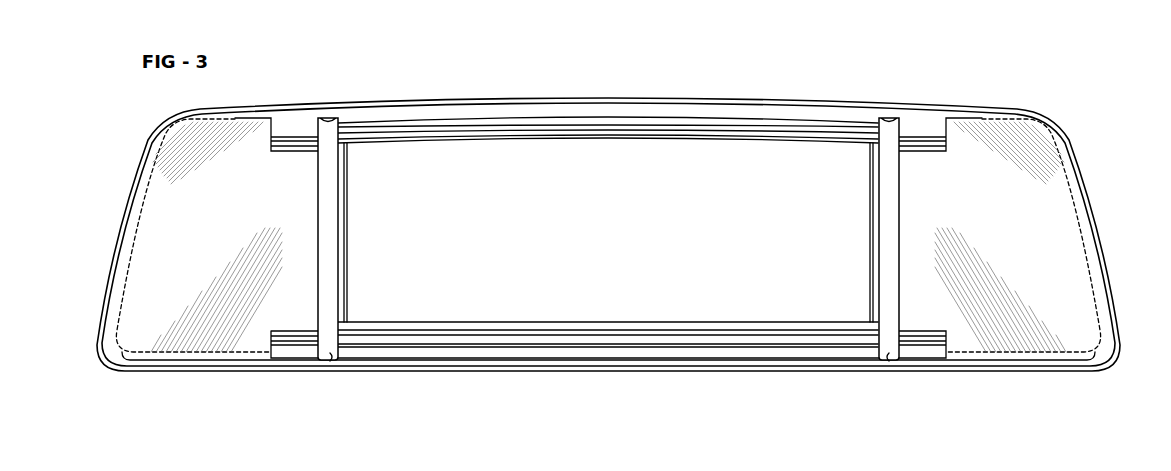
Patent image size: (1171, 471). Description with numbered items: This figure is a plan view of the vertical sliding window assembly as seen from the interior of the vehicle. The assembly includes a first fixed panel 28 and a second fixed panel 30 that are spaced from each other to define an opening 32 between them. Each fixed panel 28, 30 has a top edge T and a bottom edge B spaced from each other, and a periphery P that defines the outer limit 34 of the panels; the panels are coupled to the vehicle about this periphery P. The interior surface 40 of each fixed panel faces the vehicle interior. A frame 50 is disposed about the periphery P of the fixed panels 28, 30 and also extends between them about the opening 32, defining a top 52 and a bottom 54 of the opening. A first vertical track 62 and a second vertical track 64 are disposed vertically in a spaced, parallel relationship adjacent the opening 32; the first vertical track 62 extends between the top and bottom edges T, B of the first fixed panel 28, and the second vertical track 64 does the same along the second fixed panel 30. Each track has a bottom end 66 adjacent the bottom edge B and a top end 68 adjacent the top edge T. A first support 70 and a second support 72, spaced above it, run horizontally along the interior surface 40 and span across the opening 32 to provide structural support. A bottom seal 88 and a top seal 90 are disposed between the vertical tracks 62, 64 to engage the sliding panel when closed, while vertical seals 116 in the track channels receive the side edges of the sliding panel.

The first fixed panel 28 is at (1055, 187).
The second fixed panel 30 is at (165, 175).
The opening 32 is at (422, 300).
The outer limit 34 is at (956, 107).
The interior surface 40 is at (203, 232).
The frame 50 is at (472, 100).
The top 52 is at (517, 150).
The bottom 54 is at (686, 312).
The first vertical track 62 is at (894, 240).
The second vertical track 64 is at (320, 238).
The bottom end 66 is at (329, 358).
The top end 68 is at (328, 120).
The first support 70 is at (712, 356).
The second support 72 is at (755, 108).
The bottom seal 88 is at (540, 305).
The top seal 90 is at (713, 150).
The vertical seals 116 is at (356, 217).
The top edge T is at (256, 146).
The bottom edge B is at (130, 337).
The periphery P is at (128, 232).